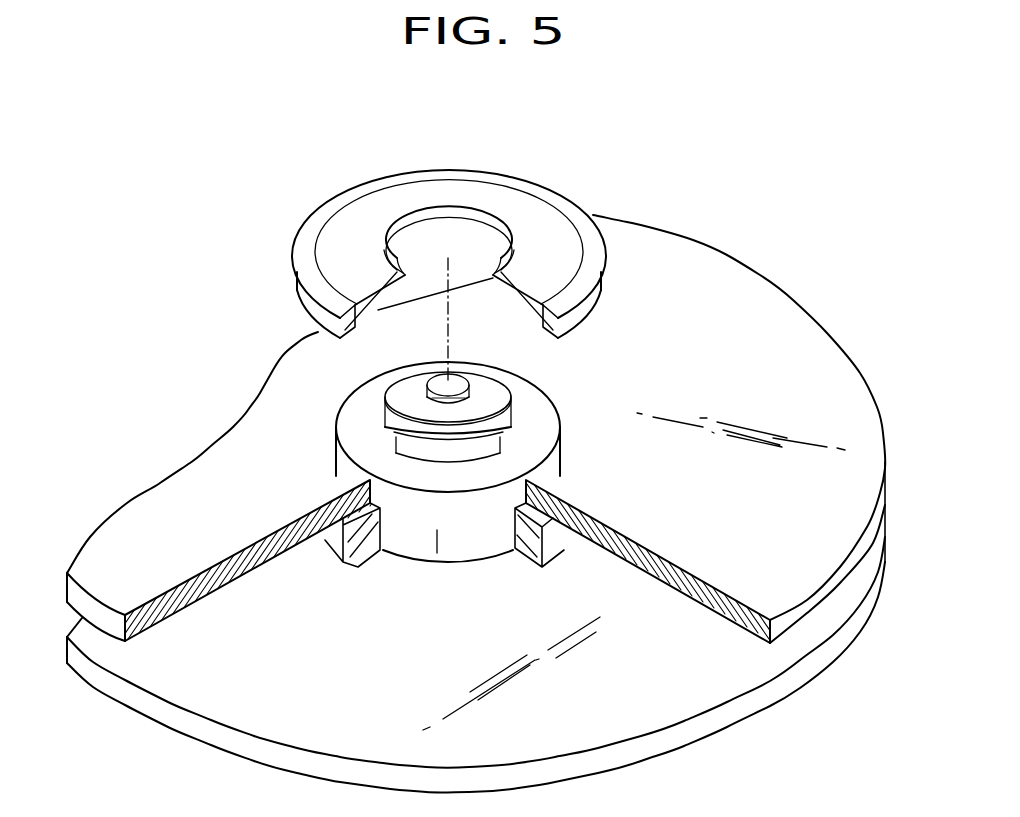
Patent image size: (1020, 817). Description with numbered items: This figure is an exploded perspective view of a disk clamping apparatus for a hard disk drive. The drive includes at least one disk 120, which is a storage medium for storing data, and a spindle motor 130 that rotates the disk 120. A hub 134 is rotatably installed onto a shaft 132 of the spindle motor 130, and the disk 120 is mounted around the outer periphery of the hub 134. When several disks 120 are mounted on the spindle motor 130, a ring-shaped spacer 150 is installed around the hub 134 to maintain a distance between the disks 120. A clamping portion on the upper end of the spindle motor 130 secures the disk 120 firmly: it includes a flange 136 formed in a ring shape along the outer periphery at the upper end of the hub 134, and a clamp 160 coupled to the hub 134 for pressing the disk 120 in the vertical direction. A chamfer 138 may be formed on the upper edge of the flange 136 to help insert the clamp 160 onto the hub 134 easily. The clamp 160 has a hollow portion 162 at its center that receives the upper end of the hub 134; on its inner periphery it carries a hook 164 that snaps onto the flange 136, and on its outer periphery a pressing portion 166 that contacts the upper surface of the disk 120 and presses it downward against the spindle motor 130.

The disk 120 is at (786, 627).
The spindle motor 130 is at (410, 410).
The shaft 132 is at (458, 385).
The hub 134 is at (363, 408).
The flange 136 is at (398, 448).
The chamfer 138 is at (505, 415).
The ring-shaped spacer 150 is at (343, 552).
The clamp 160 is at (443, 217).
The hollow portion 162 is at (443, 230).
The hook 164 is at (480, 213).
The pressing portion 166 is at (593, 257).